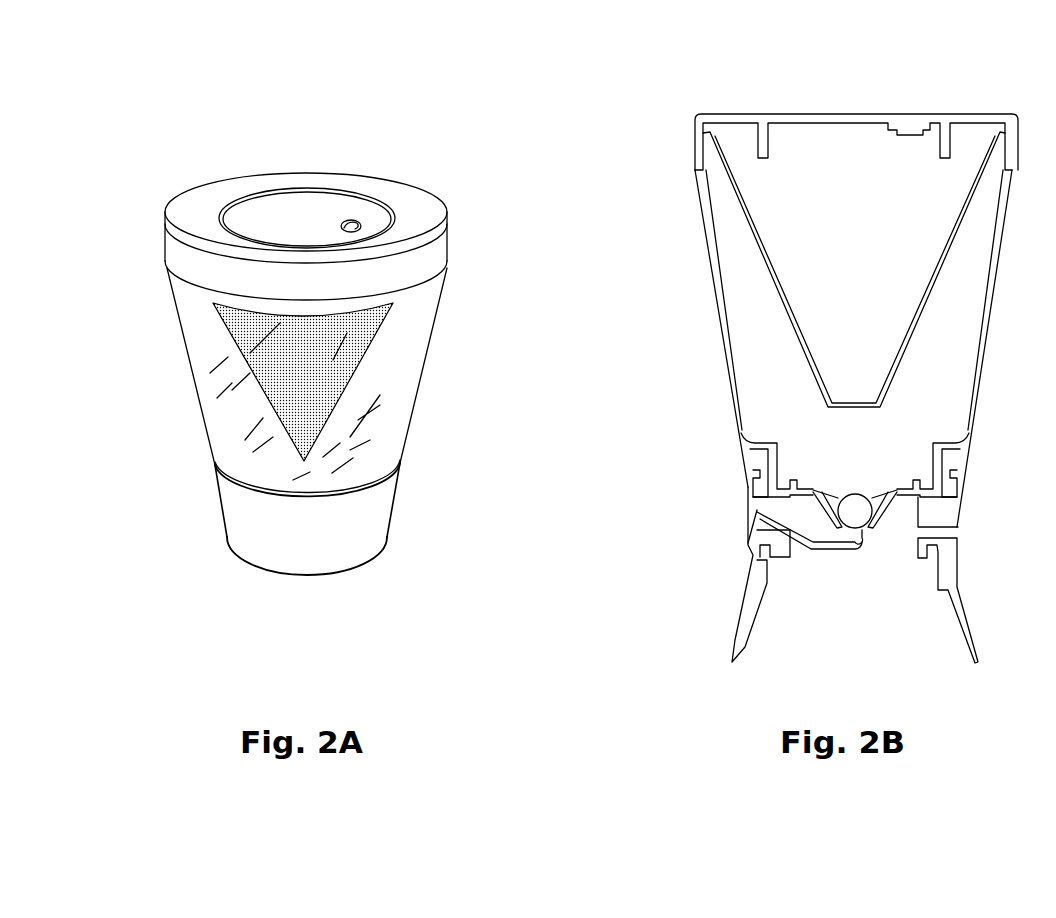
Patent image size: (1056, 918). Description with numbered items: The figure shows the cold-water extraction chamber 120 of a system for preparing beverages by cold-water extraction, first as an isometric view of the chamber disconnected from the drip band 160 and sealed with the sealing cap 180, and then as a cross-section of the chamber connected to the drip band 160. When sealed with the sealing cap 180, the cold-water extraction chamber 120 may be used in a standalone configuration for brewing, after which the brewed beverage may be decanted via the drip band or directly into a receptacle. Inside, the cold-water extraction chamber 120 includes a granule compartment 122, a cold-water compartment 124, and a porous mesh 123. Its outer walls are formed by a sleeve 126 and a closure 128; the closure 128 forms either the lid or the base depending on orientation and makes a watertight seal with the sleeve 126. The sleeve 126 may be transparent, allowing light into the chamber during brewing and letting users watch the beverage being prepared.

In FIG. 2A, the cold-water extraction chamber 120 is at (173, 310).
In FIG. 2B, the cold-water extraction chamber 120 is at (624, 399).
In FIG. 2B, the granule compartment 122 is at (832, 218).
In FIG. 2B, the porous mesh 123 is at (780, 295).
In FIG. 2B, the cold-water compartment 124 is at (788, 388).
In FIG. 2B, the sleeve 126 is at (716, 301).
In FIG. 2A, the closure 128 is at (280, 185).
In FIG. 2B, the closure 128 is at (792, 122).
In FIG. 2B, the drip band 160 is at (743, 625).
In FIG. 2A, the sealing cap 180 is at (248, 512).